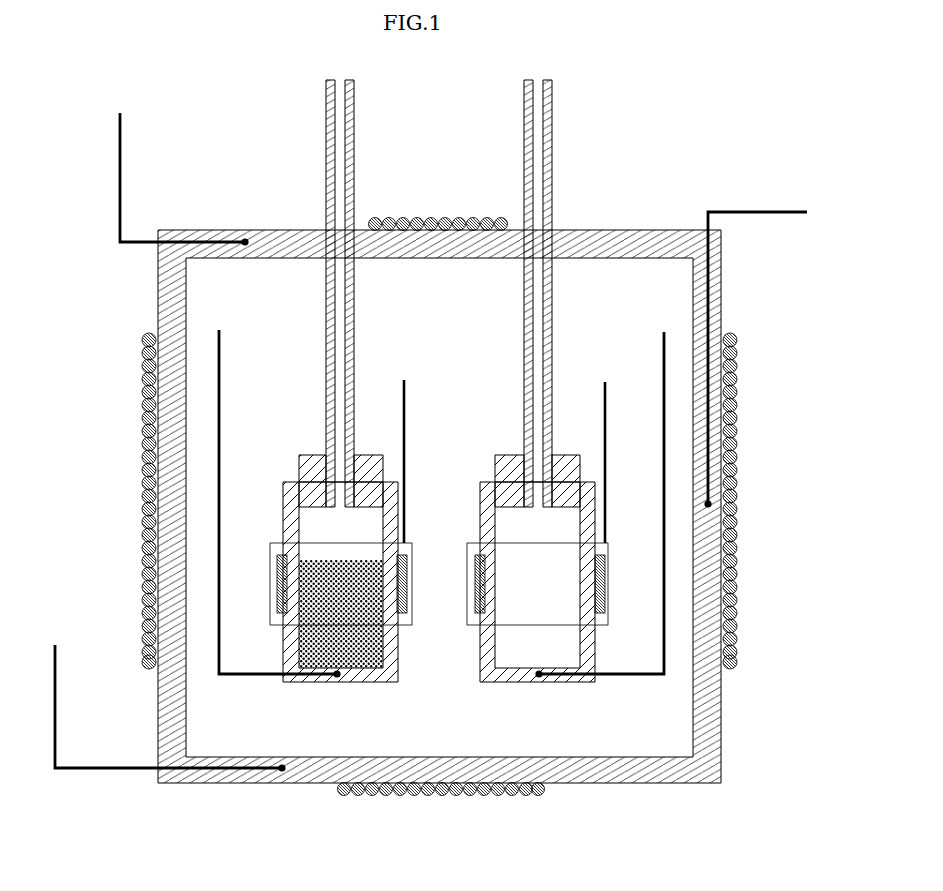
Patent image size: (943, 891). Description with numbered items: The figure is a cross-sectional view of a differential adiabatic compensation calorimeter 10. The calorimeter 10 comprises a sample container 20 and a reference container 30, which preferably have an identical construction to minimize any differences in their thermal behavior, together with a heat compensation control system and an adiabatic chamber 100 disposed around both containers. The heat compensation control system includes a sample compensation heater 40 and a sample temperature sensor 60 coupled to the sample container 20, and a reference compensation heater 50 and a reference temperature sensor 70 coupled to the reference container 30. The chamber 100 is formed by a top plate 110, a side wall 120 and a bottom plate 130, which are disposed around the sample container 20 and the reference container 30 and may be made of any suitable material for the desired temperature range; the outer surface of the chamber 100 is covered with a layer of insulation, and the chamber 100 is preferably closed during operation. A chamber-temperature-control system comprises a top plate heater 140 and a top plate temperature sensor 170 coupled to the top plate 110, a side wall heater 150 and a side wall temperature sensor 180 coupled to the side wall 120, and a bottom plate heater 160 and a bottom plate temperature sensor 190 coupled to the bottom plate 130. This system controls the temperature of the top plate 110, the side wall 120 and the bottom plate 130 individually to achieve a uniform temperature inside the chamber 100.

The calorimeter 10 is at (704, 122).
The sample container 20 is at (404, 660).
The reference container 30 is at (600, 660).
The sample compensation heater 40 is at (416, 563).
The reference compensation heater 50 is at (610, 563).
The sample temperature sensor 60 is at (224, 418).
The reference temperature sensor 70 is at (655, 418).
The adiabatic chamber 100 is at (728, 292).
The top plate 110 is at (278, 226).
The side wall 120 is at (158, 735).
The bottom plate 130 is at (260, 790).
The top plate heater 140 is at (412, 218).
The side wall heater 150 is at (142, 450).
The bottom plate heater 160 is at (460, 794).
The top plate temperature sensor 170 is at (112, 198).
The side wall temperature sensor 180 is at (124, 775).
The bottom plate temperature sensor 190 is at (746, 208).